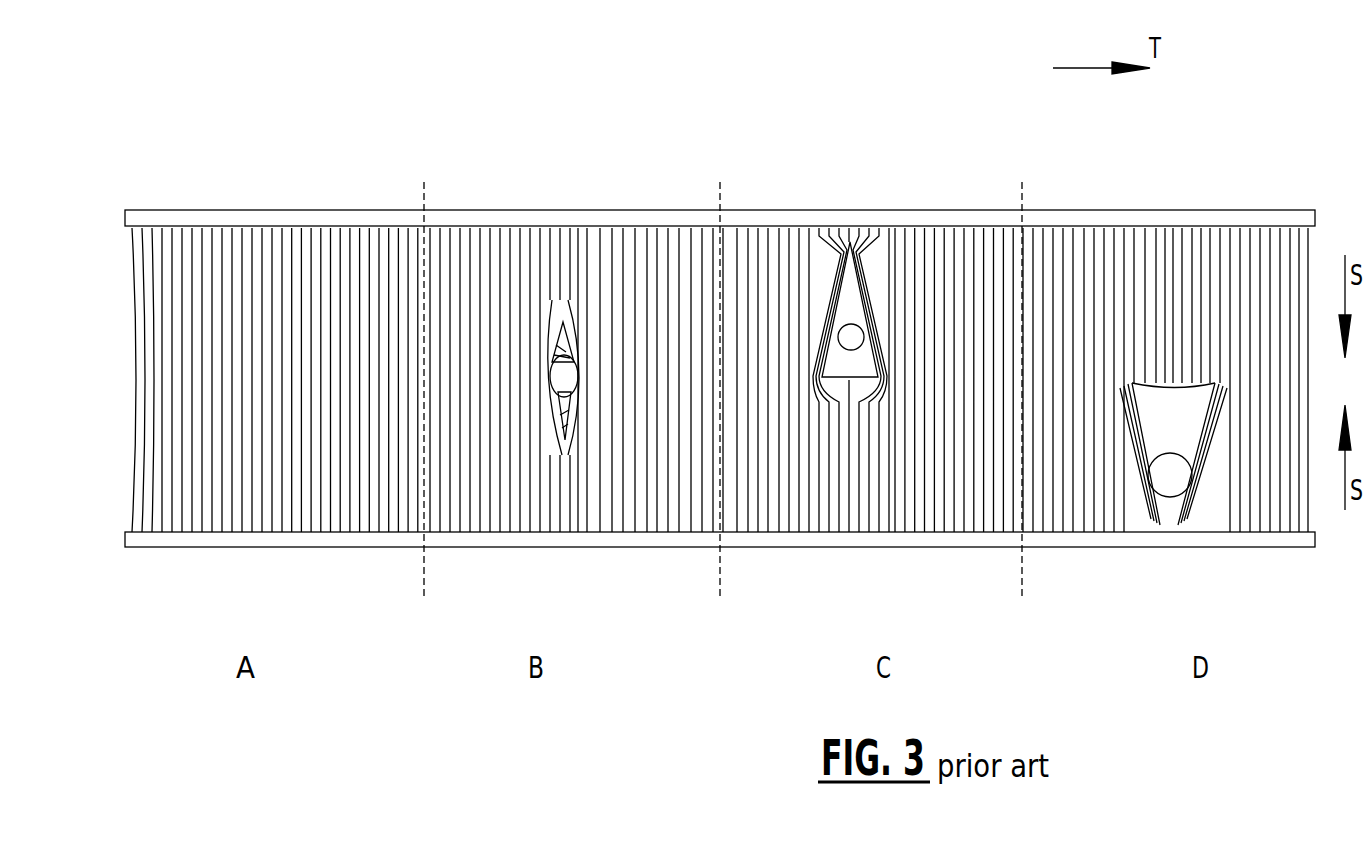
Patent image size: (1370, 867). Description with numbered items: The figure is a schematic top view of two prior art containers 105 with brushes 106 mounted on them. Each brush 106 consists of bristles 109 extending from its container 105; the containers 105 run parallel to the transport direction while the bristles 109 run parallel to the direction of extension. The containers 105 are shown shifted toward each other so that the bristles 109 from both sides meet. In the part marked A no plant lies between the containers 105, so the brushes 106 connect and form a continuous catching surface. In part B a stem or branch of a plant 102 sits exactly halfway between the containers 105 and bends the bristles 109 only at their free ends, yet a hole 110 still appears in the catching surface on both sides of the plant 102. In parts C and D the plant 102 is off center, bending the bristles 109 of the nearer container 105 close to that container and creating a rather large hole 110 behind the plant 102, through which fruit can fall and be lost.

The plant 102 is at (567, 368).
The container 105 is at (147, 222).
The brush 106 is at (106, 312).
The bristles 109 is at (208, 242).
The hole 110 is at (558, 316).